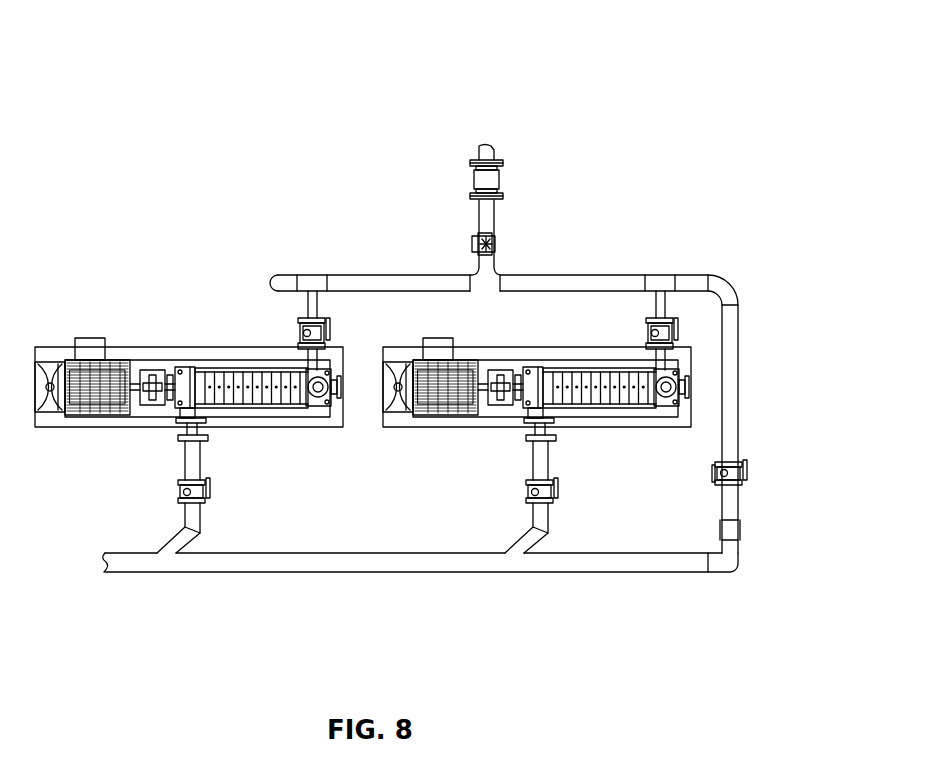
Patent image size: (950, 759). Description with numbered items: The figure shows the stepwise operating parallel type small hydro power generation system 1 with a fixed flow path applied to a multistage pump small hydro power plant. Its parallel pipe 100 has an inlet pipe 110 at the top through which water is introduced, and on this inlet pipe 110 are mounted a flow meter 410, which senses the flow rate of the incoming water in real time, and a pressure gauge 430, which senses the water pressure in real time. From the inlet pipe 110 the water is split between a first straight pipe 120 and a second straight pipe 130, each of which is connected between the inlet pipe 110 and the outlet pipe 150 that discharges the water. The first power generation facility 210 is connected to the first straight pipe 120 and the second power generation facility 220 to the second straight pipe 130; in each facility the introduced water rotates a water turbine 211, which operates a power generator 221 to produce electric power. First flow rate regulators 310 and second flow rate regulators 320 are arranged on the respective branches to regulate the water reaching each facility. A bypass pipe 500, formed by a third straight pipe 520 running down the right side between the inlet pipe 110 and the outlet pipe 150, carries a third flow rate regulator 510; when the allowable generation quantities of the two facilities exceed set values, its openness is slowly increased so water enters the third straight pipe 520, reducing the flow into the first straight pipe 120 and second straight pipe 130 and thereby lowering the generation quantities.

The stepwise operating parallel type small hydro power generation system 1 is at (370, 98).
The parallel pipe 100 is at (336, 250).
The inlet pipe 110 is at (492, 152).
The first straight pipe 120 is at (200, 447).
The second straight pipe 130 is at (548, 447).
The outlet pipe 150 is at (352, 572).
The first power generation facility 210 is at (150, 427).
The water turbine 211 is at (316, 409).
The second power generation facility 220 is at (498, 427).
The power generator 221 is at (96, 415).
The first flow rate regulator 310 is at (305, 333).
The second flow rate regulator 320 is at (653, 333).
The flow meter 410 is at (497, 180).
The pressure gauge 430 is at (494, 245).
The bypass pipe 500 is at (805, 424).
The third flow rate regulator 510 is at (747, 478).
The third straight pipe 520 is at (739, 436).